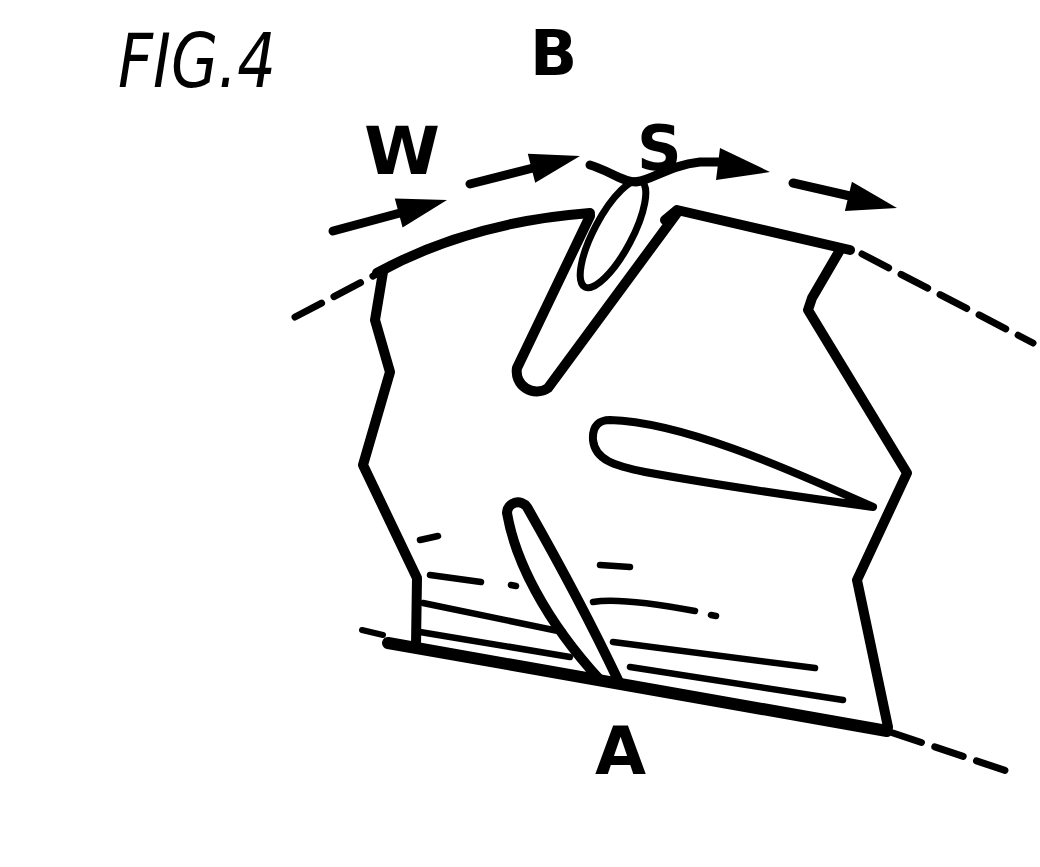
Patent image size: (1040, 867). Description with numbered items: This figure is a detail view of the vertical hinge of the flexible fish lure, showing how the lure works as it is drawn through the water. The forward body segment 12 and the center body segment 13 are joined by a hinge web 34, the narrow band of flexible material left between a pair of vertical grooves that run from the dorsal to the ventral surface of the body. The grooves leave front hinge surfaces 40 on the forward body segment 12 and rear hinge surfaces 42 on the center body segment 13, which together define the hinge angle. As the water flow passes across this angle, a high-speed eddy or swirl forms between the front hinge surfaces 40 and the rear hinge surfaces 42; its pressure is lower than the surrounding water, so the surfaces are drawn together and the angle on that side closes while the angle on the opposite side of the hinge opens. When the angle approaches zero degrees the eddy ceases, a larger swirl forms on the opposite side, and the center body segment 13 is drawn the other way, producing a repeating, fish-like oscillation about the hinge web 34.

The forward body segment 12 is at (390, 410).
The center body segment 13 is at (877, 460).
The hinge web 34 is at (520, 443).
The front hinge surfaces 40 is at (537, 297).
The rear hinge surfaces 42 is at (593, 327).